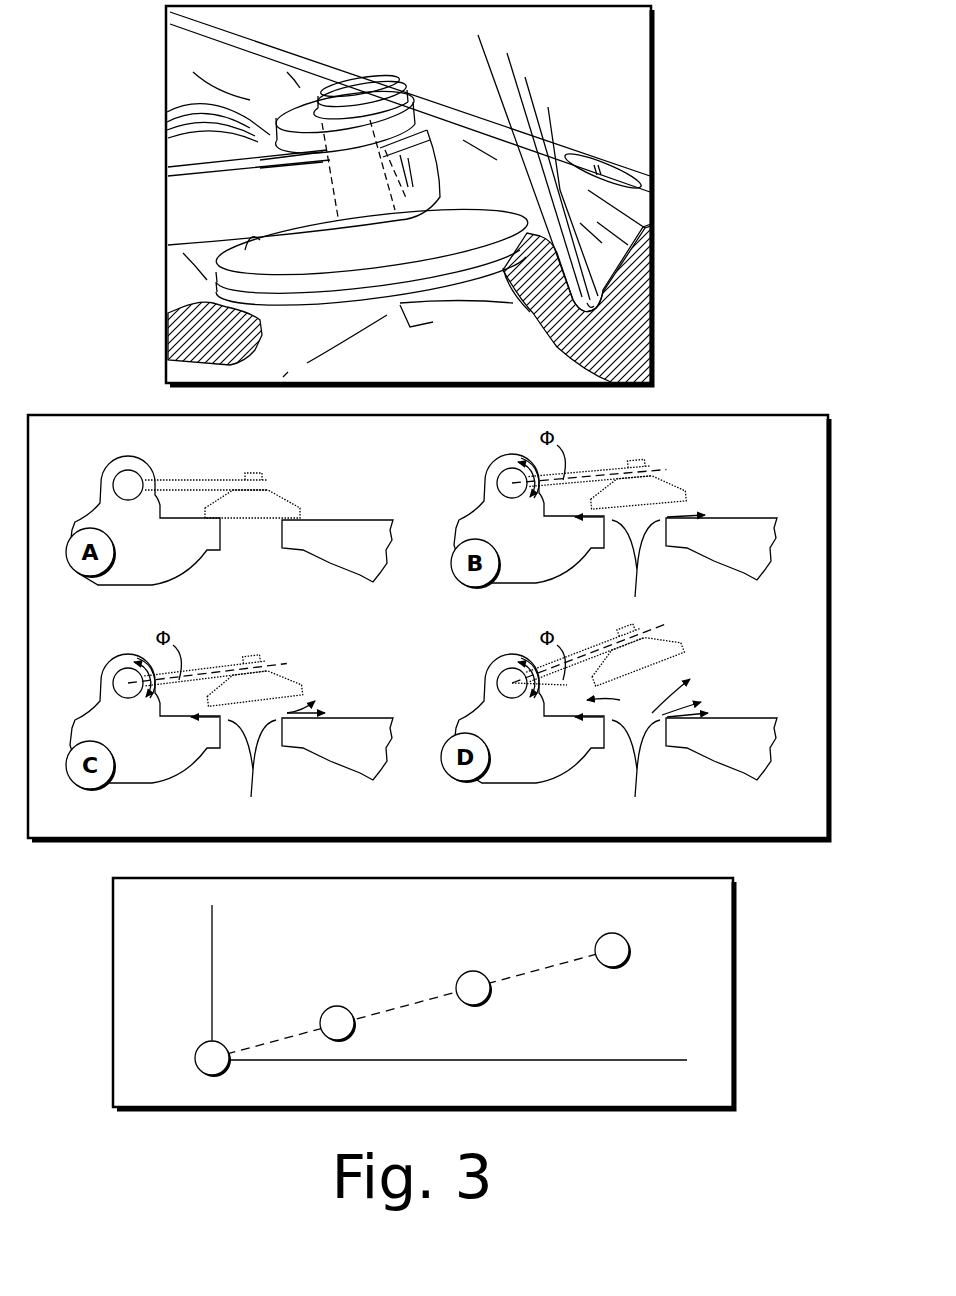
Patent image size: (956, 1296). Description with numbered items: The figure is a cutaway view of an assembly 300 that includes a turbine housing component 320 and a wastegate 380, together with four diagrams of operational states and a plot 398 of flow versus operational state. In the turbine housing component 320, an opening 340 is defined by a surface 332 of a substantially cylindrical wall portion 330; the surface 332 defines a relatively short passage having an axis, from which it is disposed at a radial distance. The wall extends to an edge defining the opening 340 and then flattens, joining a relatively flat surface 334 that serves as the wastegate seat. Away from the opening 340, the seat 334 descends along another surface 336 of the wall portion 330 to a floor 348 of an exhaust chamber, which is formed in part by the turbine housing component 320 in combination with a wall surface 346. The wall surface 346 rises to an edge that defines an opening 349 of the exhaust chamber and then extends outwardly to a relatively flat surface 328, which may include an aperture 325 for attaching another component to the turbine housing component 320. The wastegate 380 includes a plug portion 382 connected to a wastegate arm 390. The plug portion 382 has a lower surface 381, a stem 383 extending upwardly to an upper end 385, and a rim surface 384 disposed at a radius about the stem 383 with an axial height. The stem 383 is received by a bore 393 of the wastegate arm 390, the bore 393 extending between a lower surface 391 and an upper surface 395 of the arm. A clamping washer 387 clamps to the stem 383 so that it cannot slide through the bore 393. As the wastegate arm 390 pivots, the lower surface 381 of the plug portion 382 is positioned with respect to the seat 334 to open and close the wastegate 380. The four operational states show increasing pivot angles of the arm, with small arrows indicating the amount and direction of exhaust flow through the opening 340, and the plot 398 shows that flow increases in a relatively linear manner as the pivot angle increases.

The assembly 300 is at (603, 33).
The turbine housing component 320 is at (595, 354).
The aperture 325 is at (618, 167).
The relatively flat surface 328 is at (335, 67).
The substantially cylindrical wall portion 330 is at (247, 320).
The surface 332 is at (295, 333).
The relatively flat surface (wastegate seat) 334 is at (507, 56).
The surface 336 is at (525, 80).
The opening 340 is at (503, 268).
The wall surface 346 is at (459, 193).
The floor 348 is at (548, 110).
The opening of the exhaust chamber 349 is at (478, 40).
The wastegate 380 is at (402, 40).
The lower surface 381 is at (517, 333).
The plug portion 382 is at (355, 256).
The stem 383 is at (372, 92).
The rim surface 384 is at (475, 262).
The upper end 385 is at (382, 75).
The clamping washer 387 is at (288, 112).
The wastegate arm 390 is at (184, 214).
The lower surface 391 is at (326, 233).
The bore 393 is at (330, 193).
The upper surface 395 is at (228, 133).
The plot 398 is at (135, 913).